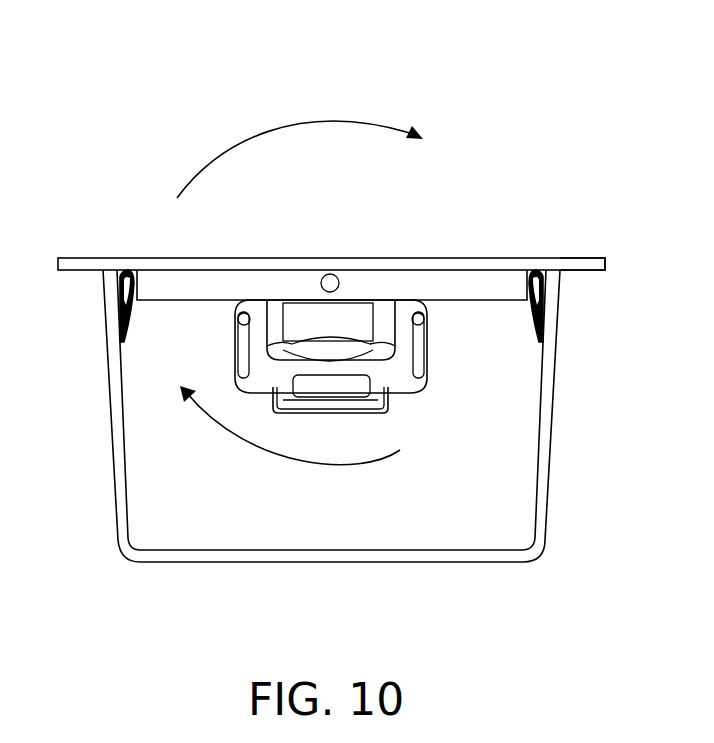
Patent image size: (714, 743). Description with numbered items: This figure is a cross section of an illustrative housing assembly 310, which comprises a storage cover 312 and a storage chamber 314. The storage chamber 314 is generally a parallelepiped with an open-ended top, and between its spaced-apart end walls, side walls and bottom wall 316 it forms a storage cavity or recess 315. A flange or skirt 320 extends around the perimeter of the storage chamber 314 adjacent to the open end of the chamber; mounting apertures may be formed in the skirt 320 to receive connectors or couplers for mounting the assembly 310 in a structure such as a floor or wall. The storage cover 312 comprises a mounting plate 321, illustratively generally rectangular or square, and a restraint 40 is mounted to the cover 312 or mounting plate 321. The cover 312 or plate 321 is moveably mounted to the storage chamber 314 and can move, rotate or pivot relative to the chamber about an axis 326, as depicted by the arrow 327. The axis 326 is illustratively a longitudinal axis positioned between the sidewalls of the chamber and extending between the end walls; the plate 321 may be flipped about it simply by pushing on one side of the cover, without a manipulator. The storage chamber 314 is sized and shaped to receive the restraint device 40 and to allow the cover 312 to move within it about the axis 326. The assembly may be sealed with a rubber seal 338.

The housing assembly 310 is at (121, 133).
The storage cover 312 is at (207, 268).
The storage chamber 314 is at (116, 492).
The storage cavity 315 is at (408, 515).
The bottom wall 316 is at (254, 563).
The skirt 320 is at (585, 262).
The mounting plate 321 is at (398, 283).
The axis 326 is at (325, 272).
The arrow 327 is at (313, 113).
The rubber seal 338 is at (121, 338).
The restraint 40 is at (402, 382).